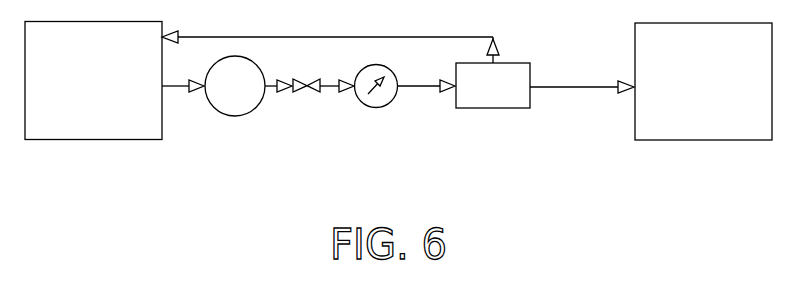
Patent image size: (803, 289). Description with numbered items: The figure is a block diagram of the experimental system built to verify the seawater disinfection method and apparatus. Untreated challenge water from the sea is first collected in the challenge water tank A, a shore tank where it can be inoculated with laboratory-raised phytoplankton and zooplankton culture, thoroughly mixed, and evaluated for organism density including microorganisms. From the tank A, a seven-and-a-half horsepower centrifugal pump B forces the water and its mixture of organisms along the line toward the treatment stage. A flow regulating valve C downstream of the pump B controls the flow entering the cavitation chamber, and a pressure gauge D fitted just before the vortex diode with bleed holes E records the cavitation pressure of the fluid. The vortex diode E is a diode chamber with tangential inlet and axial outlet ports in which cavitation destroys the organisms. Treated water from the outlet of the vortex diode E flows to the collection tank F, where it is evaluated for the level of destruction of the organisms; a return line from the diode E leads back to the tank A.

The challenge water tank A is at (93, 81).
The pump B is at (235, 86).
The flow regulating valve C is at (306, 98).
The pressure gauge D is at (376, 100).
The vortex diode with bleed holes E is at (493, 85).
The collection tank F is at (703, 81).